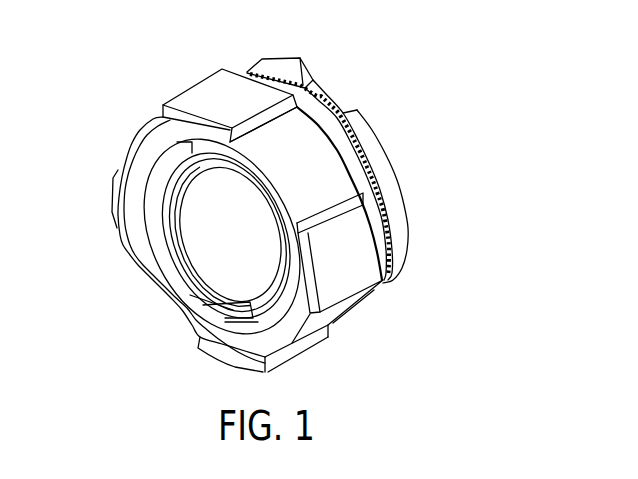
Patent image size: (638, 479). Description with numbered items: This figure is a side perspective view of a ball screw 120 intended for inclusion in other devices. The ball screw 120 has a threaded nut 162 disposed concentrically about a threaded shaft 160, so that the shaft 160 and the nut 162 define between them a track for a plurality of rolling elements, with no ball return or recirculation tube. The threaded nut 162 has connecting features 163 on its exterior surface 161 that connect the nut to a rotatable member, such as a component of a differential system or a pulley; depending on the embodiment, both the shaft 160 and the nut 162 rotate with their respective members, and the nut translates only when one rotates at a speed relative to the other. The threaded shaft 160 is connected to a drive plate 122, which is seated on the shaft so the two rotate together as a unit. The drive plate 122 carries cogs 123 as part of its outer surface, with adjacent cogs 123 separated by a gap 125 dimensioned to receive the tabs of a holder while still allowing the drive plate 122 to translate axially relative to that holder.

The ball screw 120 is at (492, 112).
The drive plate 122 is at (402, 215).
The cogs 123 is at (266, 66).
The gap 125 is at (326, 101).
The threaded shaft 160 is at (197, 247).
The exterior surface 161 is at (315, 170).
The threaded nut 162 is at (142, 137).
The connecting features 163 is at (364, 262).